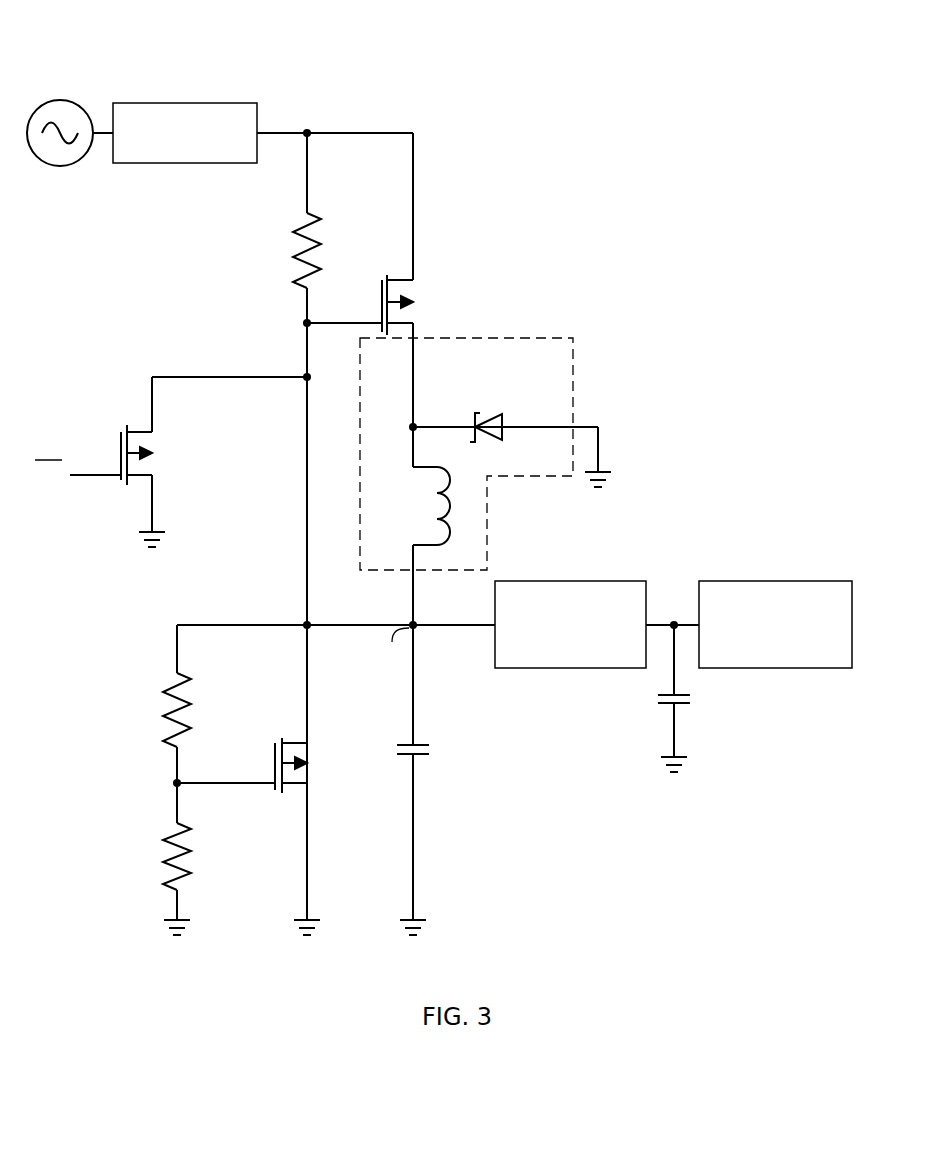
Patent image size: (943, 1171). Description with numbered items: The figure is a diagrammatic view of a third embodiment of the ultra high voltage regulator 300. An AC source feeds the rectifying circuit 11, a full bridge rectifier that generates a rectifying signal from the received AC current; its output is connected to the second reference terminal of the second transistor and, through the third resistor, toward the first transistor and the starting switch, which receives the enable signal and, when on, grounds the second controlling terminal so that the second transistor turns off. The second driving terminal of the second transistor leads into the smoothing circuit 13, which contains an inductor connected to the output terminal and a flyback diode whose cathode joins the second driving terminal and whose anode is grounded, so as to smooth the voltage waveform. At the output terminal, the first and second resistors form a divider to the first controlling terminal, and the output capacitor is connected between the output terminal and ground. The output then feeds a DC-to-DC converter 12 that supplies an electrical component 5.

The ultra high voltage regulator 300 is at (463, 52).
The rectifying circuit 11 is at (180, 103).
The DC-to-DC converter 12 is at (572, 581).
The smoothing circuit 13 is at (488, 338).
The electrical component 5 is at (735, 581).